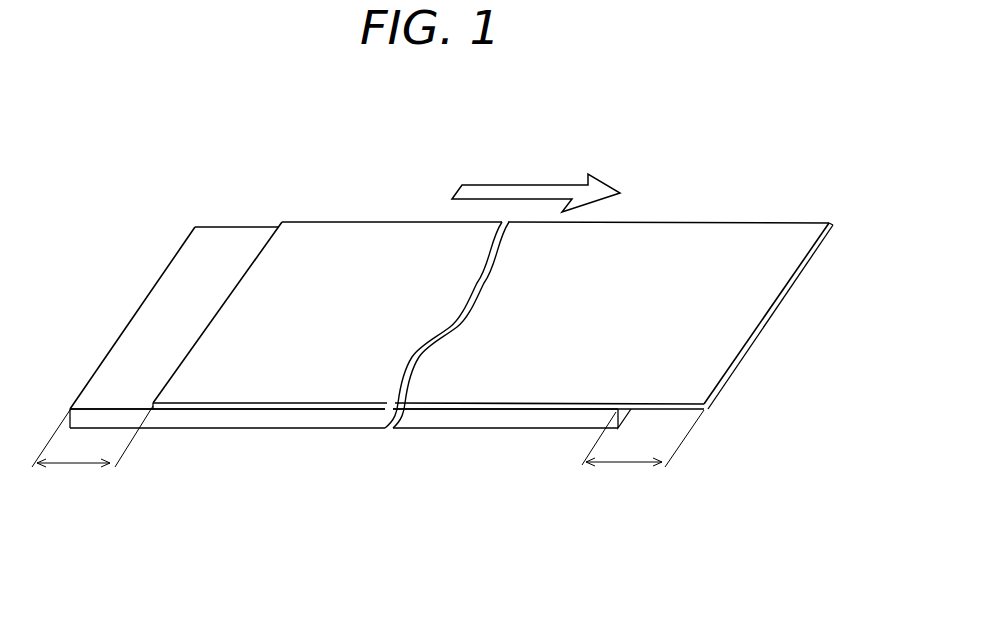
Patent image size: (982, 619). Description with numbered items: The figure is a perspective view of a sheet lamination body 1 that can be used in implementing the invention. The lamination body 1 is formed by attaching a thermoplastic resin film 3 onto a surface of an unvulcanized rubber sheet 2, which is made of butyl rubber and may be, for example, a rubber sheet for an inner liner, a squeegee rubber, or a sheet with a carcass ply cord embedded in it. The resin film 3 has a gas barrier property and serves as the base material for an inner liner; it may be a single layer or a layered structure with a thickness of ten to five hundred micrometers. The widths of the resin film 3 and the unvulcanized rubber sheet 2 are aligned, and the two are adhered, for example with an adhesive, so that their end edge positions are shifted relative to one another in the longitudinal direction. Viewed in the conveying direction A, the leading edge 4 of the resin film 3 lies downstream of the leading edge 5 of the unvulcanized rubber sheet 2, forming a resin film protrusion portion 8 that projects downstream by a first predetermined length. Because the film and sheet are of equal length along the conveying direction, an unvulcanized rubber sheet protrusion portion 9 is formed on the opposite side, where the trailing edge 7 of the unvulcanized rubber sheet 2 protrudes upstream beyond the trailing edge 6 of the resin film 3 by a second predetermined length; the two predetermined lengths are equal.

The lamination body 1 is at (650, 110).
The unvulcanized rubber sheet 2 is at (262, 428).
The thermoplastic resin film 3 is at (380, 240).
The leading edge of the resin film 4 is at (753, 343).
The leading edge of the unvulcanized rubber sheet 5 is at (626, 414).
The trailing edge of the resin film 6 is at (266, 236).
The trailing edge of the unvulcanized rubber sheet 7 is at (147, 296).
The resin film protrusion portion 8 is at (759, 301).
The unvulcanized rubber sheet protrusion portion 9 is at (233, 245).